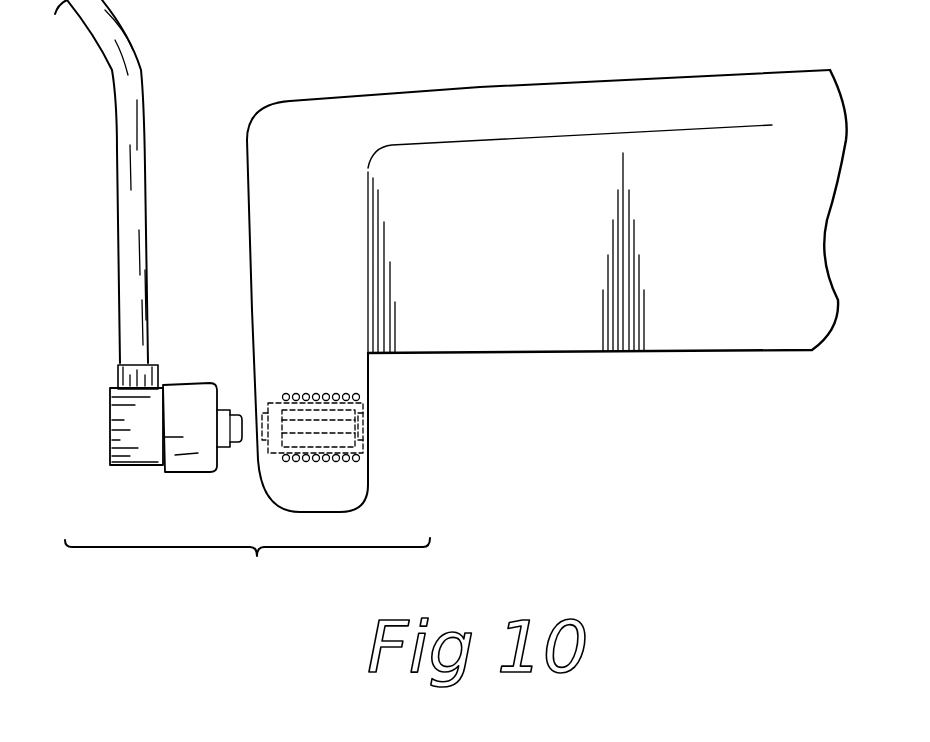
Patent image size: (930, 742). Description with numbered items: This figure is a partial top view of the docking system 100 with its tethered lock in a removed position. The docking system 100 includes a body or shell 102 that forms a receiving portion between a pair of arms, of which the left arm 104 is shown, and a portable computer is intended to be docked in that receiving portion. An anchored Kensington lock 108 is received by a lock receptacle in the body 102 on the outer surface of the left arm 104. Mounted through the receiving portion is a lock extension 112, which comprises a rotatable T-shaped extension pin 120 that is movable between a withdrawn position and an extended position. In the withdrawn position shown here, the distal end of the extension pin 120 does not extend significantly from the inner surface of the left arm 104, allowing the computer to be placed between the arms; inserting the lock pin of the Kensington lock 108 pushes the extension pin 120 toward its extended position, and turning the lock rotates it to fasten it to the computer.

The docking system 100 is at (663, 73).
The body or shell 102 is at (725, 87).
The left arm 104 is at (278, 499).
The Kensington lock 108 is at (110, 432).
The lock extension 112 is at (350, 462).
The T-shaped extension pin 120 is at (370, 422).